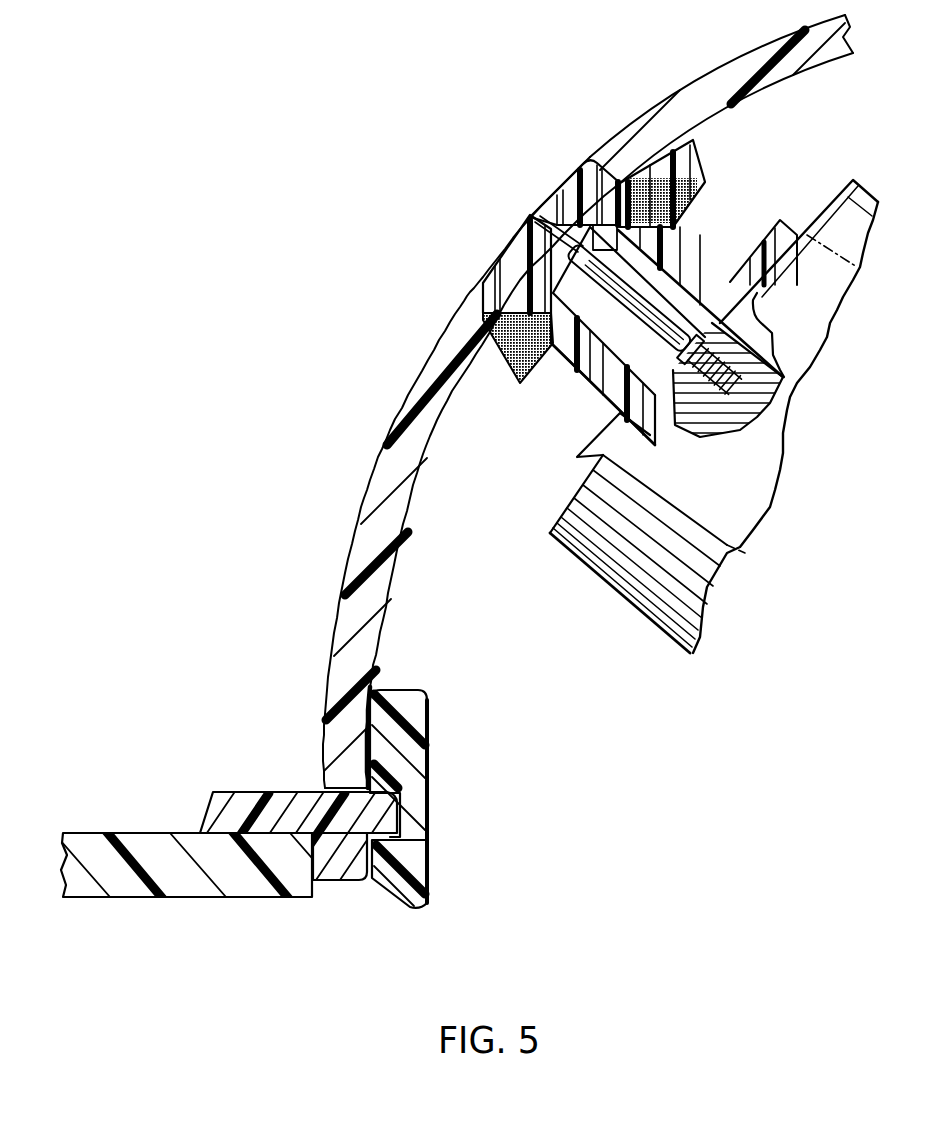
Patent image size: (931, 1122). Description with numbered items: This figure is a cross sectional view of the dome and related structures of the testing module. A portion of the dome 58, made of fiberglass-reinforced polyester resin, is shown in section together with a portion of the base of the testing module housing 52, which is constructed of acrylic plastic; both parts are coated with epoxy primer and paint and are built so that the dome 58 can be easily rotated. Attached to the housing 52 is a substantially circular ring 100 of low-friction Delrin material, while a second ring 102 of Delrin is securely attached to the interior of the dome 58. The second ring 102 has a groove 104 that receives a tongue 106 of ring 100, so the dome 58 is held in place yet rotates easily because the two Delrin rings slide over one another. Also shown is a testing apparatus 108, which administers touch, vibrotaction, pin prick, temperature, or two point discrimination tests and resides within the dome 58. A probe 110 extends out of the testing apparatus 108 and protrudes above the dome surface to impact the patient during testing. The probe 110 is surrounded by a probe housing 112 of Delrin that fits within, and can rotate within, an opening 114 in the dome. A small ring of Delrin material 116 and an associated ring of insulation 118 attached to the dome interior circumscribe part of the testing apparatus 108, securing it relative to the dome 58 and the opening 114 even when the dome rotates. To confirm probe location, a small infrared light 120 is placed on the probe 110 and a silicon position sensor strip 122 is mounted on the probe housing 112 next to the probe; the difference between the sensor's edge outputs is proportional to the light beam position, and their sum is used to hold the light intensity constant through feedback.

The testing module housing 52 is at (160, 832).
The dome 58 is at (367, 500).
The substantially circular ring 100 is at (340, 882).
The second ring 102 is at (432, 877).
The groove 104 is at (432, 836).
The tongue 106 is at (400, 793).
The testing apparatus 108 is at (722, 493).
The probe 110 is at (690, 282).
The probe housing 112 is at (560, 187).
The opening 114 is at (483, 280).
The small ring of Delrin material 116 is at (688, 165).
The ring of insulation 118 is at (548, 362).
The infrared light 120 is at (530, 213).
The silicon position sensor strip 122 is at (532, 221).